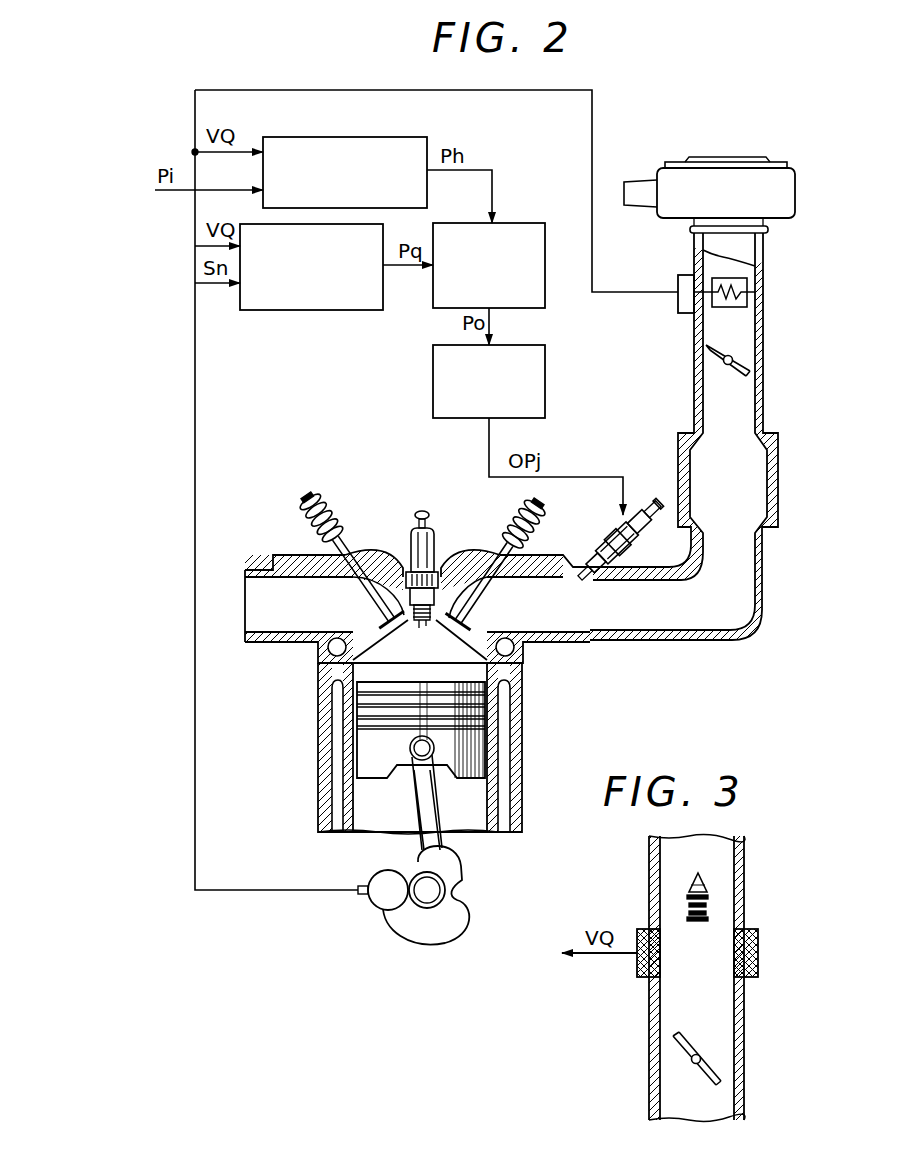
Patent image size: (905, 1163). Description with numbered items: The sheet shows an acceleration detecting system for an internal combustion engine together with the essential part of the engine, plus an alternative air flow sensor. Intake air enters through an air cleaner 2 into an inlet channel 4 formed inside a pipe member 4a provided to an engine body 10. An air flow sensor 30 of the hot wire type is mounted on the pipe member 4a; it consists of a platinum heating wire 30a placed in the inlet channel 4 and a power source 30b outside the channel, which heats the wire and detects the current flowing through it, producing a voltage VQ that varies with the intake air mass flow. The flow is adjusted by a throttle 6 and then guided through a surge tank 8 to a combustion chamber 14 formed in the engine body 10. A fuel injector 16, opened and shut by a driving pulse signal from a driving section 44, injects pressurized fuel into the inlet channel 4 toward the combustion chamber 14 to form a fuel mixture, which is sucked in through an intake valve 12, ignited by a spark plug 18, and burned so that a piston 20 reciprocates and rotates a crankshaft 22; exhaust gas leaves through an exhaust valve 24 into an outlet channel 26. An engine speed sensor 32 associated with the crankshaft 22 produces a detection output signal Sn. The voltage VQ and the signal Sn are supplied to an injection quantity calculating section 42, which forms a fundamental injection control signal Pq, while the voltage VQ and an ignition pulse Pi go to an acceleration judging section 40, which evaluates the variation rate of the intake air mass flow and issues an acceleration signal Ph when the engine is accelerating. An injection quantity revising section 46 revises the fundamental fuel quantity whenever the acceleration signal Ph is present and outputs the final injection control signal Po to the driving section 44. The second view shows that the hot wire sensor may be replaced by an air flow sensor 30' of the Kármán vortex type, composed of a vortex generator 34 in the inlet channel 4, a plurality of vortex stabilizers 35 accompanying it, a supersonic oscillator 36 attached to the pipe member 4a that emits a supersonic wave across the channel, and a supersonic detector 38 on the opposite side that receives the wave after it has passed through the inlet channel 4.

In FIG. 2, the air cleaner 2 is at (780, 221).
In FIG. 2, the inlet channel 4 is at (736, 495).
In FIG. 3, the inlet channel 4 is at (702, 1109).
In FIG. 2, the pipe member 4a is at (765, 340).
In FIG. 3, the pipe member 4a is at (745, 872).
In FIG. 2, the throttle 6 is at (730, 369).
In FIG. 3, the throttle 6 is at (704, 1068).
In FIG. 2, the surge tank 8 is at (767, 505).
In FIG. 2, the engine body 10 is at (530, 718).
In FIG. 2, the intake valve 12 is at (486, 602).
In FIG. 2, the combustion chamber 14 is at (437, 661).
In FIG. 2, the fuel injector 16 is at (596, 554).
In FIG. 2, the spark plug 18 is at (434, 546).
In FIG. 2, the piston 20 is at (462, 778).
In FIG. 2, the crankshaft 22 is at (437, 889).
In FIG. 2, the exhaust valve 24 is at (356, 604).
In FIG. 2, the outlet channel 26 is at (313, 632).
In FIG. 2, the air flow sensor 30 is at (677, 324).
In FIG. 2, the platinum heating wire 30a is at (721, 306).
In FIG. 2, the power source 30b is at (688, 300).
In FIG. 3, the air flow sensor of a Kármán vortex type 30' is at (617, 895).
In FIG. 2, the engine speed sensor 32 is at (378, 906).
In FIG. 3, the vortex generator 34 is at (704, 882).
In FIG. 3, the vortex stabilizers 35 is at (691, 915).
In FIG. 3, the supersonic oscillator 36 is at (757, 955).
In FIG. 3, the supersonic detector 38 is at (640, 971).
In FIG. 2, the acceleration judging section 40 is at (408, 137).
In FIG. 2, the injection quantity calculating section 42 is at (378, 312).
In FIG. 2, the driving section 44 is at (448, 420).
In FIG. 2, the injection quantity revising section 46 is at (529, 223).